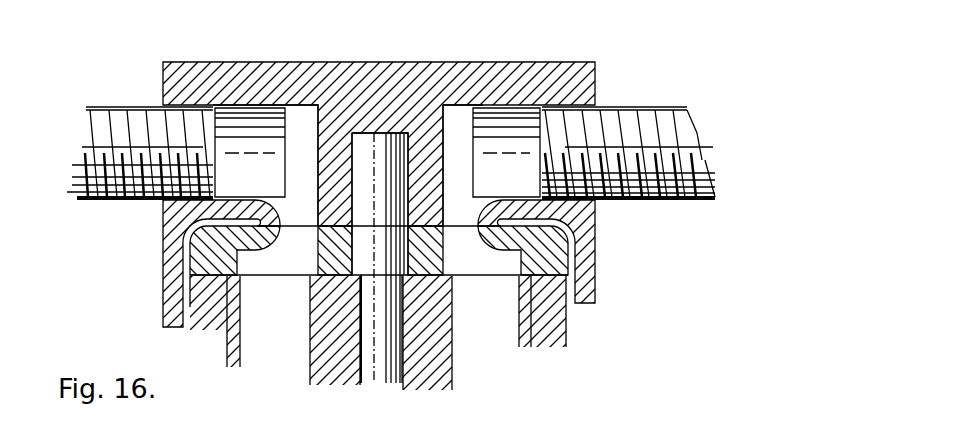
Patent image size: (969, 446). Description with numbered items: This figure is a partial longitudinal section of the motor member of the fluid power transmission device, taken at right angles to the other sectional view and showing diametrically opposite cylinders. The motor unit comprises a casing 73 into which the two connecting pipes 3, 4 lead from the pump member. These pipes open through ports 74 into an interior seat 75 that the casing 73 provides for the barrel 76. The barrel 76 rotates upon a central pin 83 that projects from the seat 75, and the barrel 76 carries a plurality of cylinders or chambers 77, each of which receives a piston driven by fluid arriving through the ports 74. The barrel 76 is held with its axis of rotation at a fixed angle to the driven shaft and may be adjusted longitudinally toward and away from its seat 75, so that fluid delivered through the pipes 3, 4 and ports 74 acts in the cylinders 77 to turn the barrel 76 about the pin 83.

The pipe 3 is at (677, 200).
The pipe 4 is at (85, 202).
The casing 73 is at (597, 288).
The port 74 is at (348, 165).
The interior seat 75 is at (335, 226).
The barrel 76 is at (530, 330).
The cylinder 77 is at (379, 333).
The central pin 83 is at (365, 140).